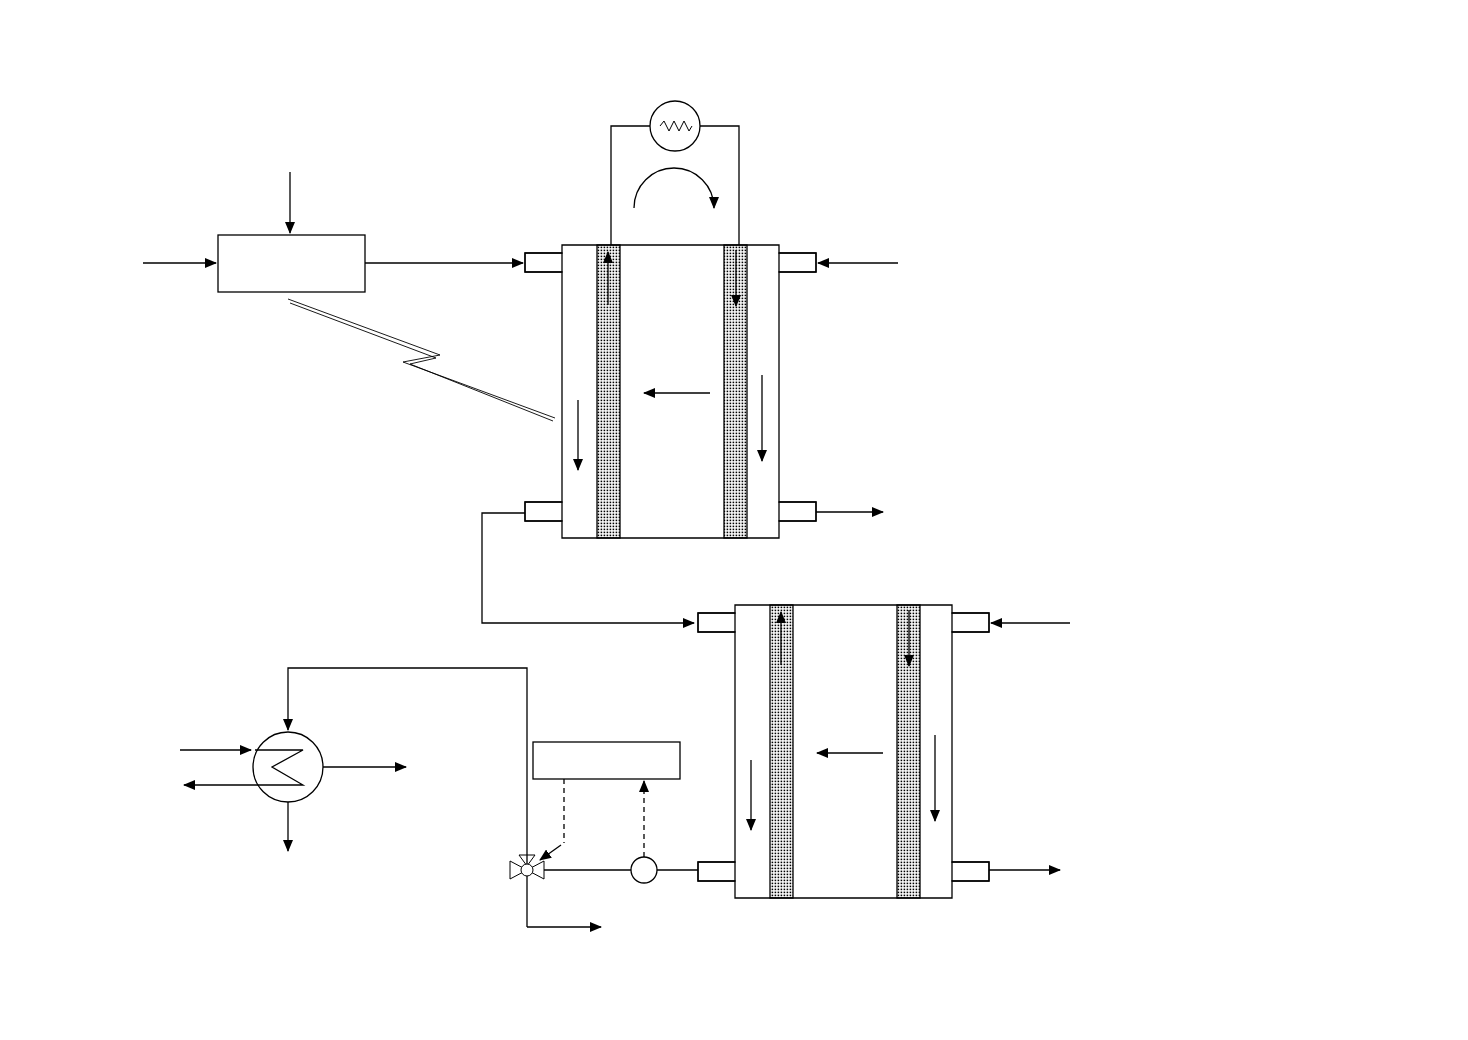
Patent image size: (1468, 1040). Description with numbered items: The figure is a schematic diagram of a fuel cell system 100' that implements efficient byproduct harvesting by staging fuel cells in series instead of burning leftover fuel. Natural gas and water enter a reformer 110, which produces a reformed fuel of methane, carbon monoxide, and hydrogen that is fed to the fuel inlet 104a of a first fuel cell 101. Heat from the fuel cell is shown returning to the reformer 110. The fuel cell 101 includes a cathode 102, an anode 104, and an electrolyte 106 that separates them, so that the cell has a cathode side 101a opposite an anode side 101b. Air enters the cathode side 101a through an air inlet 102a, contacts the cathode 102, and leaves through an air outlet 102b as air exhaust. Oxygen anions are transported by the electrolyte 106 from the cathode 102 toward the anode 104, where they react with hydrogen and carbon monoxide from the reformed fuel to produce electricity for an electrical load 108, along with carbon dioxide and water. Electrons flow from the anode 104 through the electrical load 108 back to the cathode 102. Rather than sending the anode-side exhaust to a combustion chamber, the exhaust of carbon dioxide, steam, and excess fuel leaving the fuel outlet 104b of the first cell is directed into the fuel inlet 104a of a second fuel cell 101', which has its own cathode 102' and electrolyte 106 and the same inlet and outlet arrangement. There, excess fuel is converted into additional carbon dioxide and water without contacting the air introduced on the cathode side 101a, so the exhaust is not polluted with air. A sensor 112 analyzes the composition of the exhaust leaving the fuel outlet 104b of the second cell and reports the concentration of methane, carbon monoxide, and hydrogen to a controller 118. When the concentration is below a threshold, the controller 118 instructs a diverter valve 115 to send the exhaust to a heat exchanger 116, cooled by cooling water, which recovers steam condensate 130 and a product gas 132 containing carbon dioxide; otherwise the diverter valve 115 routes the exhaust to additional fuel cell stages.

The fuel cell system 100' is at (770, 496).
The fuel cell 101 is at (758, 391).
The second fuel cell 101' is at (934, 751).
The cathode side 101a is at (788, 382).
The anode side 101b is at (557, 368).
The cathode 102 is at (763, 366).
The cathode of second fuel cell 102' is at (938, 727).
The air inlet 102a is at (800, 253).
The air outlet 102b is at (797, 502).
The anode 104 is at (600, 245).
The fuel inlet 104a is at (530, 252).
The fuel outlet 104b is at (547, 502).
The electrolyte 106 is at (659, 526).
The electrical load 108 is at (661, 92).
The reformer 110 is at (277, 284).
The sensor 112 is at (637, 858).
The diverter valve 115 is at (523, 852).
The heat exchanger 116 is at (265, 740).
The controller 118 is at (620, 742).
The steam condensate 130 is at (274, 926).
The product gas 132 is at (421, 786).